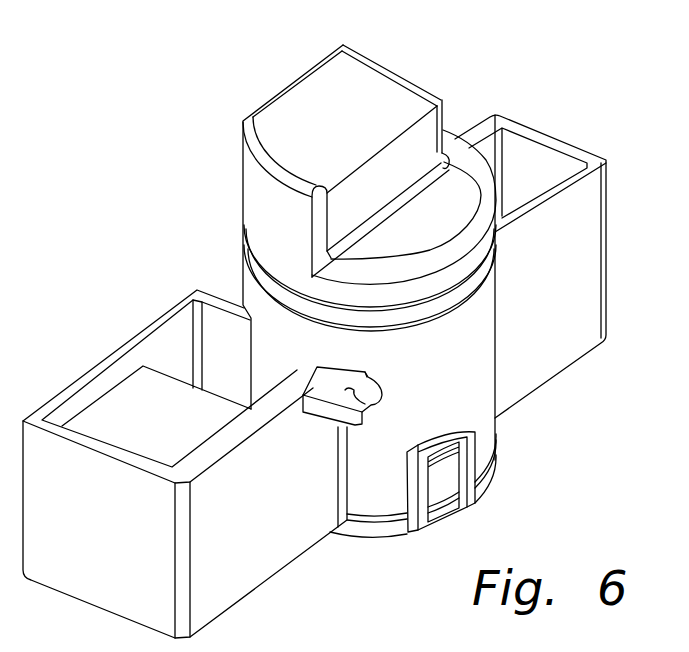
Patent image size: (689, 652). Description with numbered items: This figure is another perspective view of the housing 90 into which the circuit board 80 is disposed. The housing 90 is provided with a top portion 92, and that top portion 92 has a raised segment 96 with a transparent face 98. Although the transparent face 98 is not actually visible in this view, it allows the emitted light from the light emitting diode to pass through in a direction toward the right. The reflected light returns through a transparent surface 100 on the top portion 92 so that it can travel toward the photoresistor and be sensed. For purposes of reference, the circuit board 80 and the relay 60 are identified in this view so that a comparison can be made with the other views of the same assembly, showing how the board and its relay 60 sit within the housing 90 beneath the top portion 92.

The relay 60 is at (128, 402).
The circuit board 80 is at (558, 175).
The housing 90 is at (582, 340).
The top portion 92 is at (250, 197).
The raised segment 96 is at (313, 93).
The transparent face 98 is at (392, 70).
The transparent surface 100 is at (451, 143).